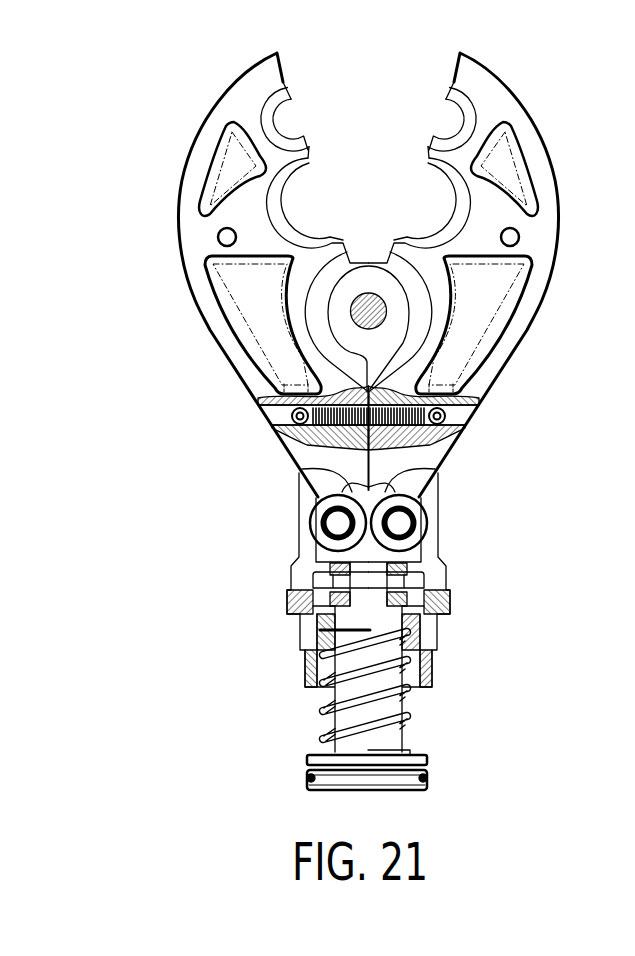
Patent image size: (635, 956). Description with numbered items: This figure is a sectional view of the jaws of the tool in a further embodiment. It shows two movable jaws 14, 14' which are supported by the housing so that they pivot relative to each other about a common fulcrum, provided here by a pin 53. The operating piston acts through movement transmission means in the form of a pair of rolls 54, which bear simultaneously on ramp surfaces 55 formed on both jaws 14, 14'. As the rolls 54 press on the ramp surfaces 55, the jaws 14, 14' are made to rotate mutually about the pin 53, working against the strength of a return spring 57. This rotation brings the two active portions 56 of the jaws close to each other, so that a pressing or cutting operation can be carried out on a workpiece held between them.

The movable jaw 14 is at (212, 325).
The movable jaw 14' is at (520, 325).
The pin 53 is at (368, 294).
The pair of rolls 54 is at (324, 521).
The ramp surfaces 55 is at (302, 473).
The active portions 56 is at (298, 122).
The return spring 57 is at (450, 377).